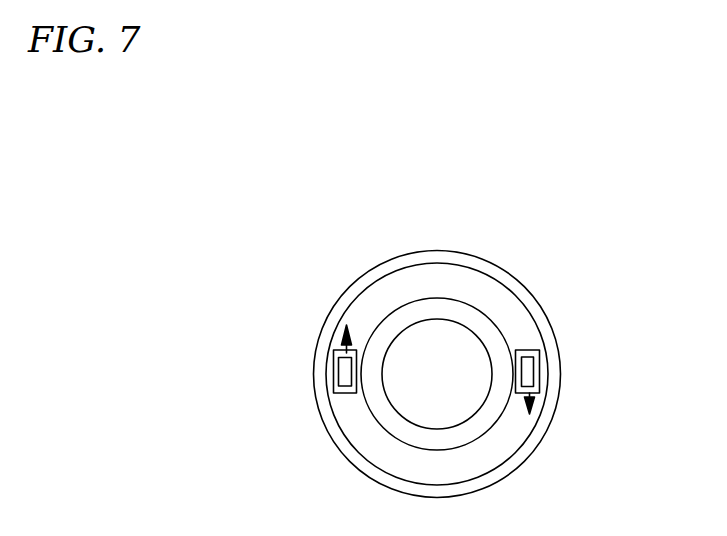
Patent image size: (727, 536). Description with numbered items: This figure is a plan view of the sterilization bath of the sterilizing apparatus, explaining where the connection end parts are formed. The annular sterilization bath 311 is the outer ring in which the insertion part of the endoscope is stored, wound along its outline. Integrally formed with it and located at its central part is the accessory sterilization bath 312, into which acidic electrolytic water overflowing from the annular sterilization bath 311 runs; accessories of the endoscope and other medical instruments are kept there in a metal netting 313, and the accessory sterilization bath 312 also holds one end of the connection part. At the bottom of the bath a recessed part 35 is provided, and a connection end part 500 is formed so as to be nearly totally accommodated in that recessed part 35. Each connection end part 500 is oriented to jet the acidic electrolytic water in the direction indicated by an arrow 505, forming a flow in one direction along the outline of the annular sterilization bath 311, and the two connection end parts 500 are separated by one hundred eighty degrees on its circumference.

The annular sterilization bath 311 is at (506, 308).
The accessory sterilization bath 312 is at (436, 370).
The metal netting 313 is at (446, 251).
The connection end part 500 is at (338, 360).
The recessed part 35 is at (343, 378).
The arrow 505 is at (344, 332).